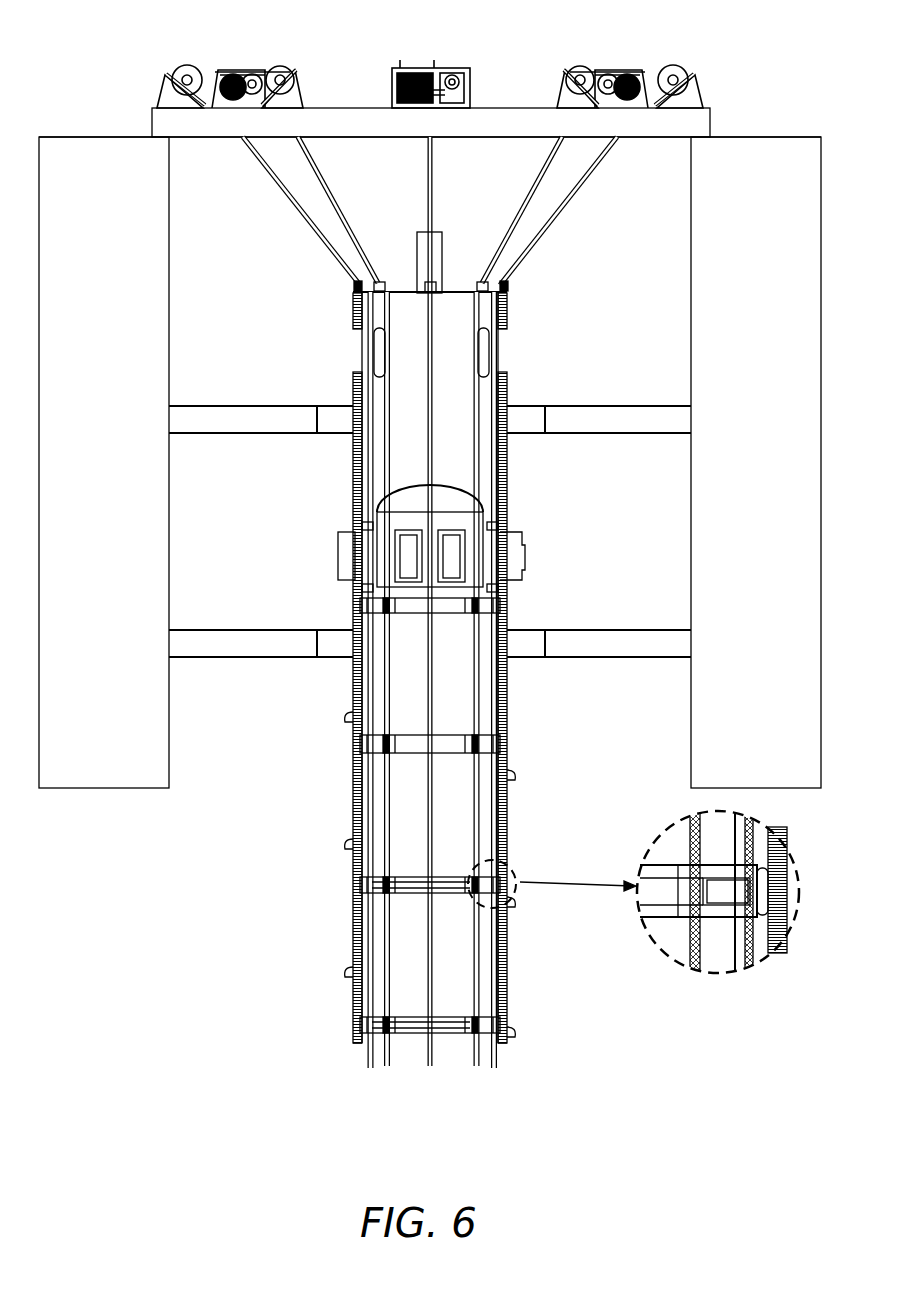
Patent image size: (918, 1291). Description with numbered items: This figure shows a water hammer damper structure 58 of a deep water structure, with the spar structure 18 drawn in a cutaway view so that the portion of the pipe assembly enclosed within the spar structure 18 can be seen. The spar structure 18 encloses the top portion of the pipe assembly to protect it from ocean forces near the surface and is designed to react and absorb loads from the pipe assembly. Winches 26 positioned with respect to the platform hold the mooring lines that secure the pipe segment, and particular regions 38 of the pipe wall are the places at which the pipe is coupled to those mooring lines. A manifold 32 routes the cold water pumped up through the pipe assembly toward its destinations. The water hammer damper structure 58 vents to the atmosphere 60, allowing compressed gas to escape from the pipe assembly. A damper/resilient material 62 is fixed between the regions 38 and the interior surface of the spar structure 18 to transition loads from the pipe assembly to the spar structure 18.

The winches 26 is at (267, 70).
The atmosphere 60 is at (488, 207).
The water hammer damper structure 58 is at (442, 265).
The spar structure 18 is at (508, 978).
The regions 38 is at (405, 735).
The manifold 32 is at (517, 558).
The damper/resilient material 62 is at (766, 886).